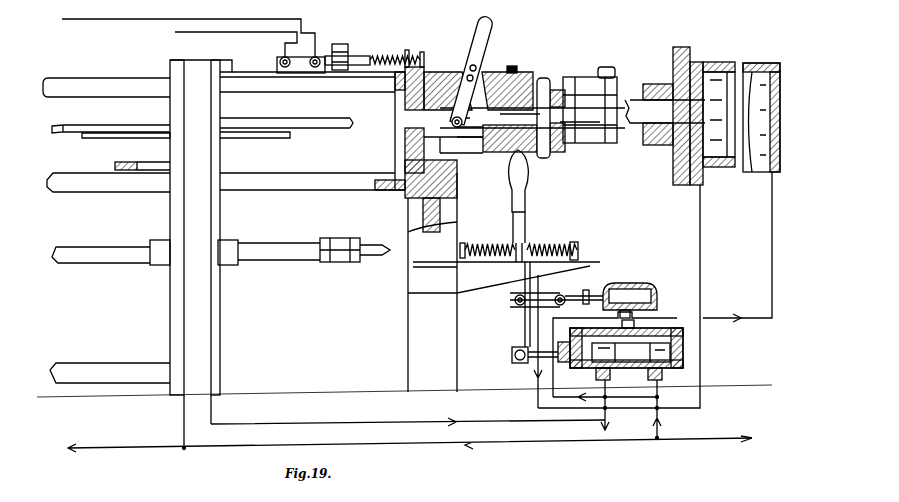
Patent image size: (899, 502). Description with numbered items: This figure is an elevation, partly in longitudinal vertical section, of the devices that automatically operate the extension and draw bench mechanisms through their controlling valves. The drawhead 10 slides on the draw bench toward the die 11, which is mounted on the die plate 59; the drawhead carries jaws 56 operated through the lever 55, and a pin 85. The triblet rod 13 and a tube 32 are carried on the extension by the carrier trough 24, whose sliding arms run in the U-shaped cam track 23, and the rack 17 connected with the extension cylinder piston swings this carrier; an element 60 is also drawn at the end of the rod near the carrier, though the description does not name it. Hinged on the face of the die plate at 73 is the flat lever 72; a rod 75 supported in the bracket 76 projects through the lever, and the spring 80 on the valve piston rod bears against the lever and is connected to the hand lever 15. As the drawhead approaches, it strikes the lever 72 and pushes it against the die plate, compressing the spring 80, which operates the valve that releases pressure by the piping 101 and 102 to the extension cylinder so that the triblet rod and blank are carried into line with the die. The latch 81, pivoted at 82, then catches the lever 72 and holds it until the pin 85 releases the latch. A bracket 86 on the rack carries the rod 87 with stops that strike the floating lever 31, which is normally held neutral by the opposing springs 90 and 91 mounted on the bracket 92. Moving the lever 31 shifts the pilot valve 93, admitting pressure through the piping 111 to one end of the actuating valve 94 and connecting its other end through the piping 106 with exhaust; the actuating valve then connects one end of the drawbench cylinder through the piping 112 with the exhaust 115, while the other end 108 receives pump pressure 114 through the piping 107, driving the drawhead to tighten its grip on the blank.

The drawhead 10 is at (562, 150).
The die 11 is at (404, 134).
The triblet rod 13 is at (56, 134).
The lever 15 is at (376, 56).
The rack 17 is at (92, 258).
The cam track 23 is at (140, 168).
The carrier trough 24 is at (258, 136).
The lever 31 is at (528, 173).
The tube 32 is at (240, 122).
The lever 55 is at (490, 30).
The jaws 56 is at (461, 132).
The die plate 59 is at (406, 157).
The rod end 60 is at (330, 121).
The flat lever 72 is at (410, 52).
The hinge 73 is at (448, 160).
The rod 75 is at (425, 58).
The bracket 76 is at (412, 64).
The spring 80 is at (385, 60).
The latch 81 is at (562, 75).
The pivot 82 is at (608, 67).
The pin 85 is at (519, 69).
The bracket 86 is at (350, 244).
The rod 87 is at (380, 247).
The spring 90 is at (480, 247).
The spring 91 is at (552, 247).
The bracket 92 is at (478, 285).
The pilot valve 93 is at (656, 284).
The actuating valve 94 is at (642, 332).
The piping 101 is at (140, 19).
The piping 102 is at (141, 448).
The piping 106 is at (631, 345).
The piping 107 is at (619, 296).
The left hand end of drawbench cylinder 108 is at (695, 146).
The piping 111 is at (662, 318).
The piping 112 is at (741, 192).
The pressure 114 is at (700, 438).
The exhaust 115 is at (608, 404).